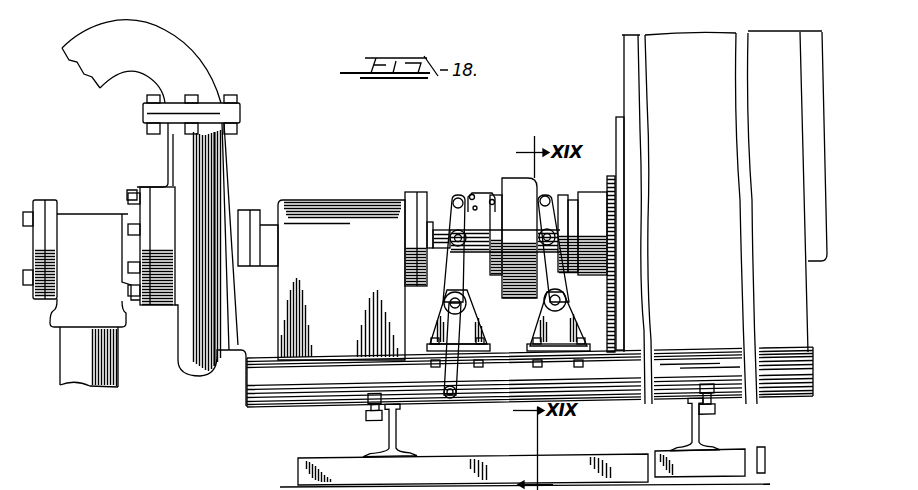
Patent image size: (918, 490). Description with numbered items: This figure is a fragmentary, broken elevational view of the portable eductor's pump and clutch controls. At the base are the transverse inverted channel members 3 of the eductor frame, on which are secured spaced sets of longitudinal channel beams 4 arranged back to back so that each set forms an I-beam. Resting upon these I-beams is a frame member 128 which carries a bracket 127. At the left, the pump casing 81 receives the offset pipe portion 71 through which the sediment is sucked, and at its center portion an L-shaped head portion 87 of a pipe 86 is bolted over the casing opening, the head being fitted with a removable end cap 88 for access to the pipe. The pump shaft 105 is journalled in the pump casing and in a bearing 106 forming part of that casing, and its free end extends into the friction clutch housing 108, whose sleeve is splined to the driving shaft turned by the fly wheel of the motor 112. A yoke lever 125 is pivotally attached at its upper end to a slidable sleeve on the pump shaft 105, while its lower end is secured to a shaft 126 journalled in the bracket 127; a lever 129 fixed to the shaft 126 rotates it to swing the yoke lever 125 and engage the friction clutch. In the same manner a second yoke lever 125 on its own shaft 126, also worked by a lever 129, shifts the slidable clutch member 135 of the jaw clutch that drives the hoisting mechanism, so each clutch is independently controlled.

The offset pipe portion 71 is at (187, 53).
The pump casing 81 is at (202, 170).
The L-shaped head portion 87 is at (67, 222).
The removable end cap 88 is at (37, 202).
The pipe 86 is at (107, 350).
The bearing 106 is at (319, 210).
The pump shaft 105 is at (441, 230).
The friction clutch housing 108 is at (503, 180).
The yoke lever 125 is at (455, 272).
The shaft 126 is at (450, 307).
The slidable clutch member 135 is at (564, 285).
The bracket 127 is at (536, 325).
The frame member 128 is at (589, 198).
The motor 112 is at (694, 60).
The lever 129 is at (258, 387).
The channel beams 4 is at (388, 438).
The transverse inverted channel members 3 is at (473, 465).